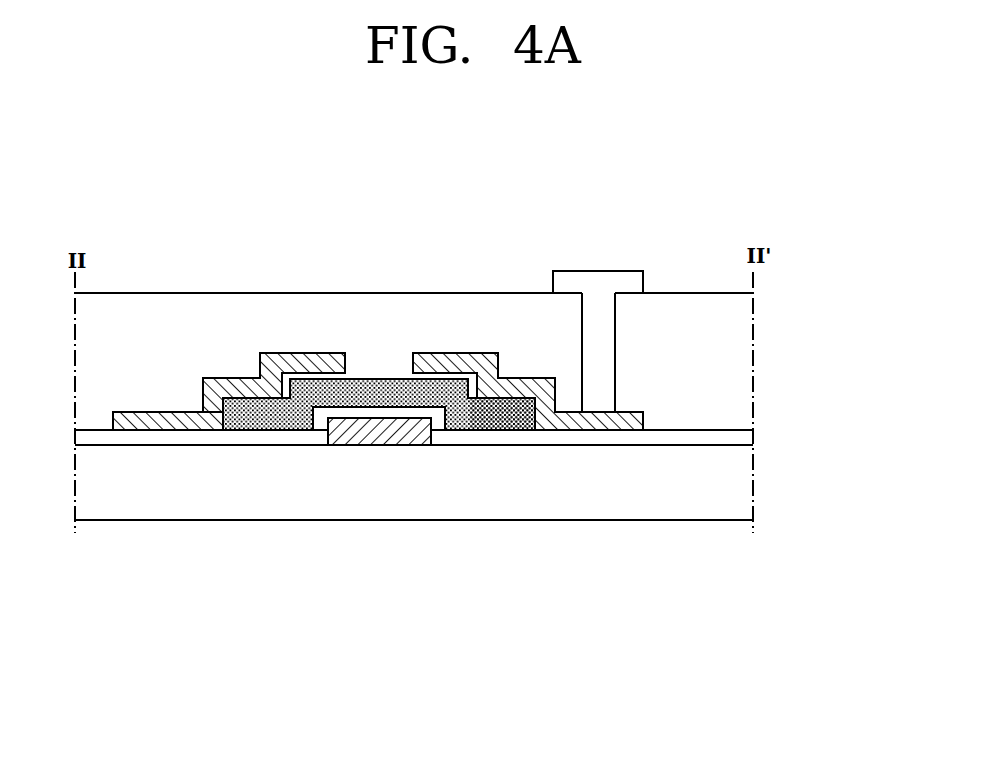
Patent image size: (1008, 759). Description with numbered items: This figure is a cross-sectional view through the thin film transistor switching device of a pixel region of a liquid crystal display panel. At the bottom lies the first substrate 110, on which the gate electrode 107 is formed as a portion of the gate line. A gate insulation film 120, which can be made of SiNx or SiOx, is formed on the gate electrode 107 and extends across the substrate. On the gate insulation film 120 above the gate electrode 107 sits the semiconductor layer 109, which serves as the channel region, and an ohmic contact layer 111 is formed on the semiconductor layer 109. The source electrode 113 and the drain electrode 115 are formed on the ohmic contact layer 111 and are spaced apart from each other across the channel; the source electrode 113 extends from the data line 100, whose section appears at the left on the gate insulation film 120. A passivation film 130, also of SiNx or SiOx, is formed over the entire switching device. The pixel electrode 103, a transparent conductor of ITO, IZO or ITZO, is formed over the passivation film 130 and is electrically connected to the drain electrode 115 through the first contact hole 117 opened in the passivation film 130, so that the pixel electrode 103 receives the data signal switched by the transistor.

The data line 100 is at (154, 420).
The pixel electrode 103 is at (595, 282).
The gate electrode 107 is at (383, 438).
The semiconductor layer 109 is at (470, 420).
The first substrate 110 is at (745, 479).
The ohmic contact layer 111 is at (515, 403).
The source electrode 113 is at (312, 353).
The drain electrode 115 is at (453, 353).
The first contact hole 117 is at (607, 356).
The gate insulation film 120 is at (745, 432).
The passivation film 130 is at (745, 357).